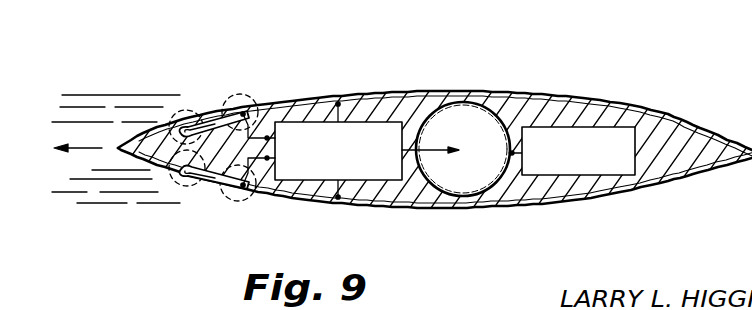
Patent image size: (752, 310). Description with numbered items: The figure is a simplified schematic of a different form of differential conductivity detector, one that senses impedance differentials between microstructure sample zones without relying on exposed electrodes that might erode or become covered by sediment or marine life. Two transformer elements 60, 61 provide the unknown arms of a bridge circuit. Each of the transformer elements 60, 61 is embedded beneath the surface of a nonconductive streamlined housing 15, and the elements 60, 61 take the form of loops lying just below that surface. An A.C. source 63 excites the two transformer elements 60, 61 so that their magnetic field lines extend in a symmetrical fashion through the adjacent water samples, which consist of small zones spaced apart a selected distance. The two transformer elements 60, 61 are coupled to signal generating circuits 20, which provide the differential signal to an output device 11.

The nonconductive streamlined housing 15 is at (708, 136).
The signal generating circuits 20 is at (390, 121).
The output device 11 is at (489, 104).
The A.C. source 63 is at (614, 126).
The transformer element 60 is at (234, 116).
The transformer element 61 is at (226, 187).